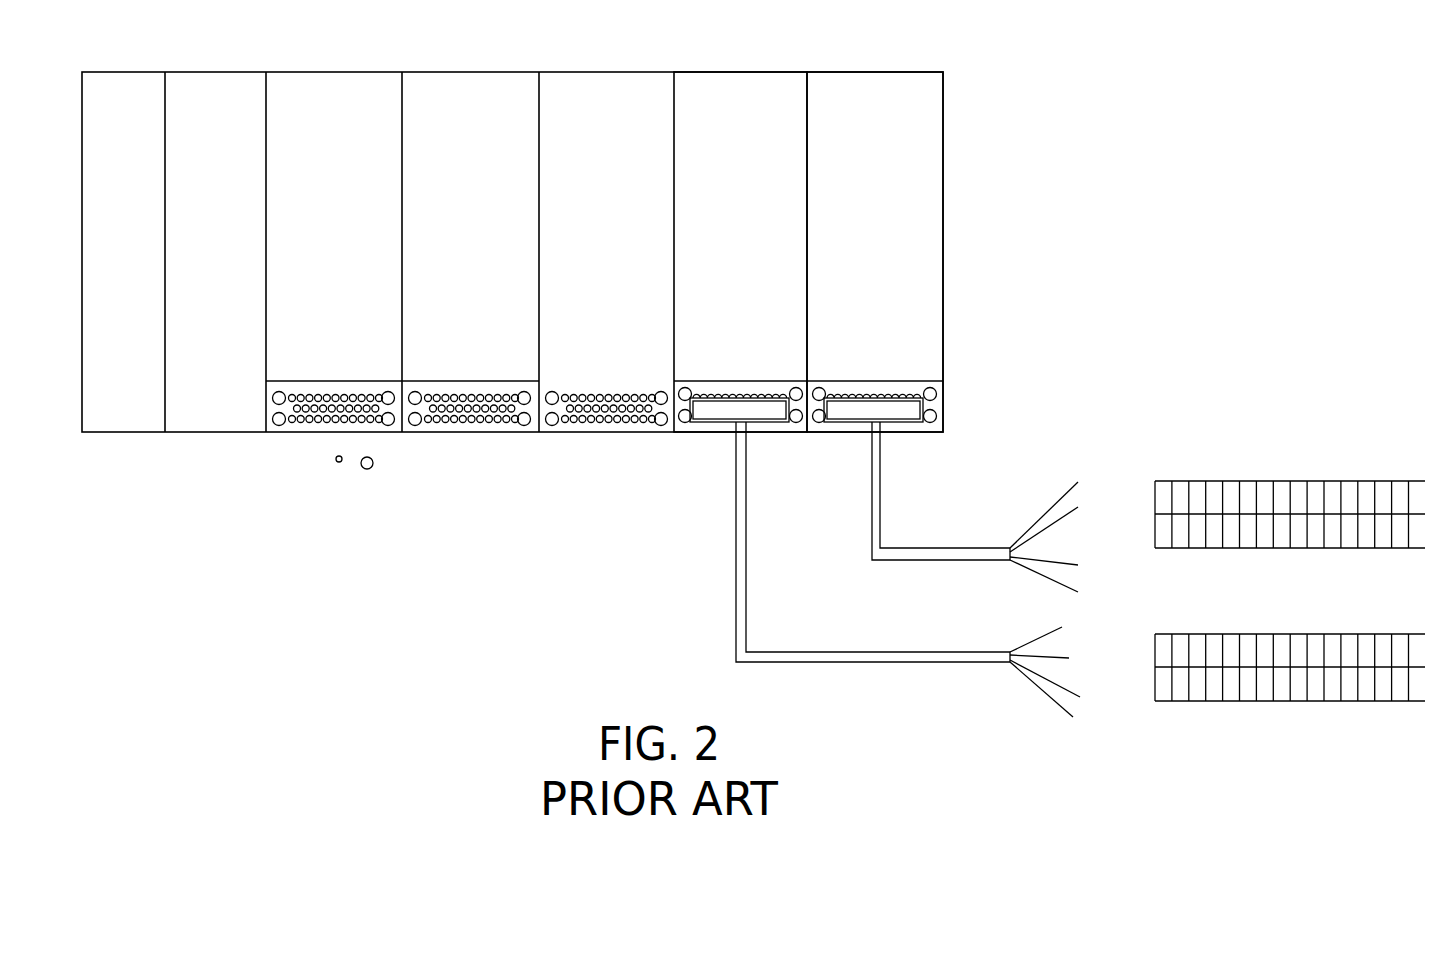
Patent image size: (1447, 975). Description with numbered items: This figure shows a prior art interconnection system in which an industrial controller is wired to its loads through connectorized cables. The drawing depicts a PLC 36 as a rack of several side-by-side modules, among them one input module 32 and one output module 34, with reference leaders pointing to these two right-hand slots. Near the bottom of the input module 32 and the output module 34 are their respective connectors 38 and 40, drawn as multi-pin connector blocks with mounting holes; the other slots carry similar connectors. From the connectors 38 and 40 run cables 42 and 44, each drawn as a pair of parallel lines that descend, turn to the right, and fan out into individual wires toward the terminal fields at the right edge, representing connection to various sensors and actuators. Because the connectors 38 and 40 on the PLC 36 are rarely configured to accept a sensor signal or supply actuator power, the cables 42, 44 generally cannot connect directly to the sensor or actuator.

The input module 32 is at (738, 88).
The output module 34 is at (858, 88).
The PLC 36 is at (330, 507).
The connector 38 is at (705, 419).
The connector 40 is at (858, 420).
The cable 42 is at (798, 652).
The cable 44 is at (943, 548).